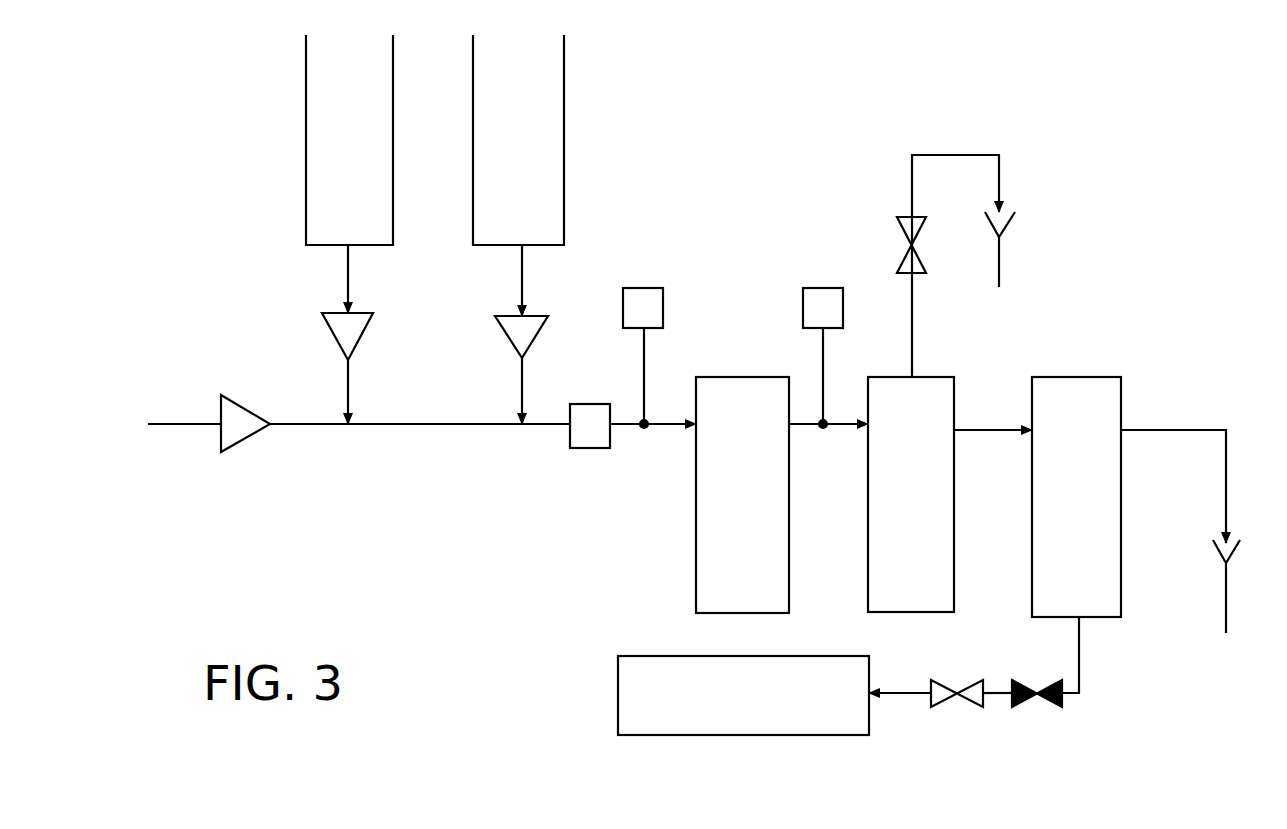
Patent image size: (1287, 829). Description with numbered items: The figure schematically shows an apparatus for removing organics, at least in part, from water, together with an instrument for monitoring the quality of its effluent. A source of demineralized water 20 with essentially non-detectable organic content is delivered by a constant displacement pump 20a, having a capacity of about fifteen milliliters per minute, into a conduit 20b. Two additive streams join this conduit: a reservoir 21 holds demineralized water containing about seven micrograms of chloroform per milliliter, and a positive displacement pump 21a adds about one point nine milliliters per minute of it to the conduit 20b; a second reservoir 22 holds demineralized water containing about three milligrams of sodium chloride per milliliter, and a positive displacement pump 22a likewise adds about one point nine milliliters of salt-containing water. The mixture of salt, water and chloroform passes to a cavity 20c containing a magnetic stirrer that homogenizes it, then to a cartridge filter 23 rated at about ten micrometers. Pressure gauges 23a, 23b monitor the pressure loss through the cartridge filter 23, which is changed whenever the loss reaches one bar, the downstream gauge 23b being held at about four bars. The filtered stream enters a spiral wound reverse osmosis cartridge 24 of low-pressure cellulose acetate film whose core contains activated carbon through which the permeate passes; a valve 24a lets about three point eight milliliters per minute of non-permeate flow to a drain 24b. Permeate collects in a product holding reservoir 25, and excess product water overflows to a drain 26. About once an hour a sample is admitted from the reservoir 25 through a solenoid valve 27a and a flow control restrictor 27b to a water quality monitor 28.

The source of demineralized water 20 is at (172, 417).
The constant displacement pump 20a is at (238, 427).
The conduit 20b is at (425, 428).
The cavity 20c is at (592, 437).
The reservoir 21 is at (349, 174).
The positive displacement pump 21a is at (337, 328).
The reservoir 22 is at (518, 175).
The positive displacement pump 22a is at (527, 329).
The cartridge filter 23 is at (742, 495).
The pressure gauge 23a is at (657, 298).
The pressure gauge 23b is at (830, 307).
The spiral wound reverse osmosis cartridge 24 is at (933, 383).
The valve 24a is at (915, 258).
The drain 24b is at (1017, 210).
The product holding reservoir 25 is at (1076, 497).
The drain 26 is at (1245, 547).
The solenoid valve 27a is at (1043, 703).
The flow control restrictor 27b is at (948, 697).
The water quality monitor 28 is at (743, 695).